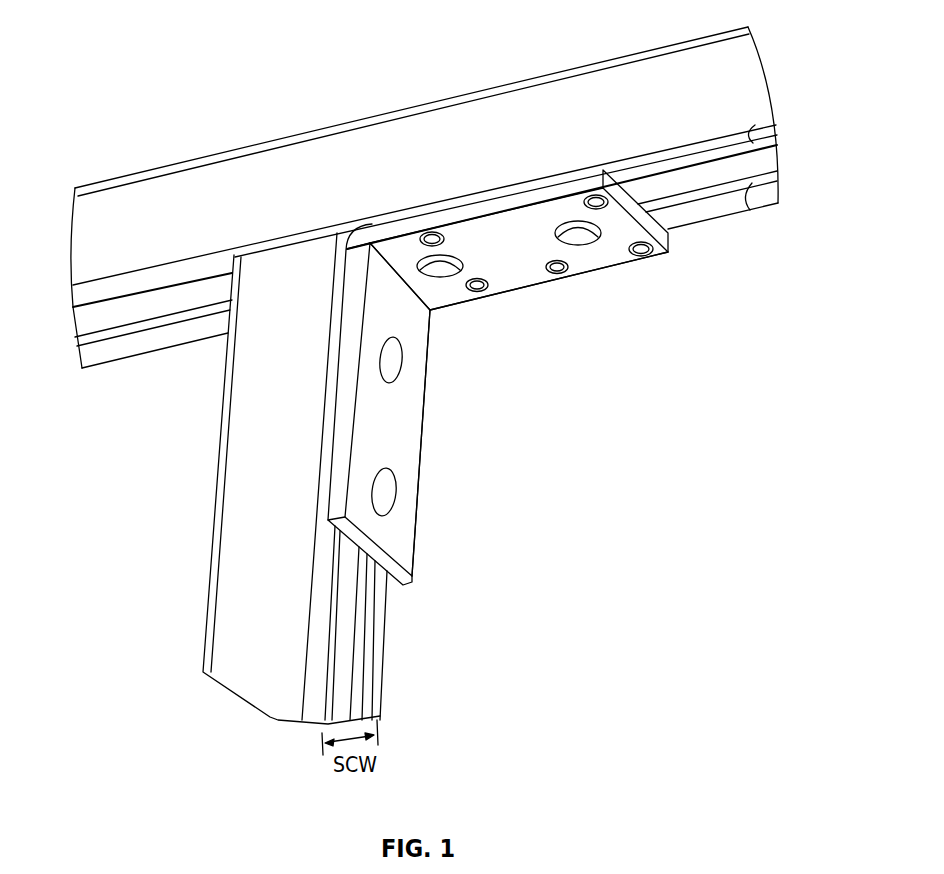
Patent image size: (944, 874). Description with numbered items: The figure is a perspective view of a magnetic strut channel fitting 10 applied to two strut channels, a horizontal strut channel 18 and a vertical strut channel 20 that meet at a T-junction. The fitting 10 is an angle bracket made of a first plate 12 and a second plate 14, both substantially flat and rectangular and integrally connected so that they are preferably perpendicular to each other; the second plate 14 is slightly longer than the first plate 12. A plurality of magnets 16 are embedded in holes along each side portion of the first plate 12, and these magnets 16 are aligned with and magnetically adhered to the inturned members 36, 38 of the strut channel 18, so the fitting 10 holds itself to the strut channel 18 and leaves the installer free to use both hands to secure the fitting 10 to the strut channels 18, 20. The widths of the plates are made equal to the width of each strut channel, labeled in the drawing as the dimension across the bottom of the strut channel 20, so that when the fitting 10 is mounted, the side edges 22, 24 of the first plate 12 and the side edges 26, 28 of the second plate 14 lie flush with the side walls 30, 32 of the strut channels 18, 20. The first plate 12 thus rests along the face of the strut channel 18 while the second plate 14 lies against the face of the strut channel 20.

The magnetic strut channel fitting 10 is at (424, 299).
The first plate 12 is at (507, 243).
The second plate 14 is at (319, 404).
The magnets 16 is at (432, 234).
The strut channel 18 is at (482, 122).
The strut channel 20 is at (267, 478).
The side edge 22 is at (598, 271).
The side edge 24 is at (533, 193).
The side edge 26 is at (423, 449).
The side edge 28 is at (347, 381).
The side wall 30 is at (447, 197).
The side wall 32 is at (255, 485).
The inturned member 36 is at (755, 125).
The inturned member 38 is at (752, 183).